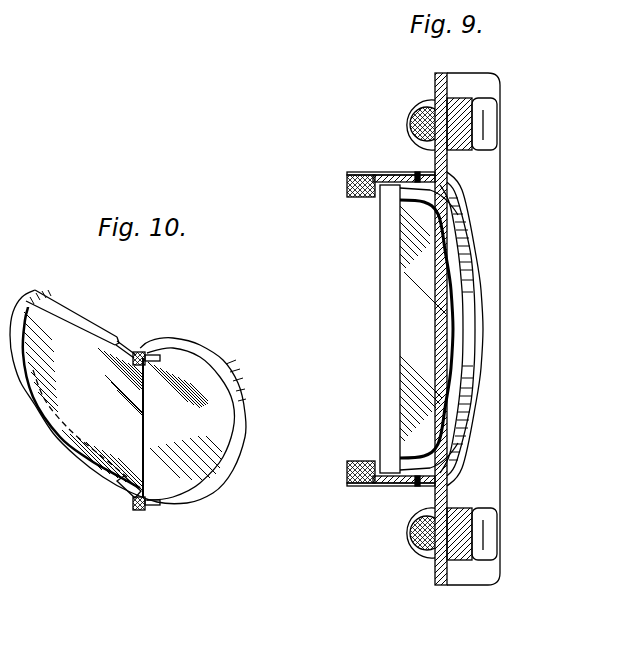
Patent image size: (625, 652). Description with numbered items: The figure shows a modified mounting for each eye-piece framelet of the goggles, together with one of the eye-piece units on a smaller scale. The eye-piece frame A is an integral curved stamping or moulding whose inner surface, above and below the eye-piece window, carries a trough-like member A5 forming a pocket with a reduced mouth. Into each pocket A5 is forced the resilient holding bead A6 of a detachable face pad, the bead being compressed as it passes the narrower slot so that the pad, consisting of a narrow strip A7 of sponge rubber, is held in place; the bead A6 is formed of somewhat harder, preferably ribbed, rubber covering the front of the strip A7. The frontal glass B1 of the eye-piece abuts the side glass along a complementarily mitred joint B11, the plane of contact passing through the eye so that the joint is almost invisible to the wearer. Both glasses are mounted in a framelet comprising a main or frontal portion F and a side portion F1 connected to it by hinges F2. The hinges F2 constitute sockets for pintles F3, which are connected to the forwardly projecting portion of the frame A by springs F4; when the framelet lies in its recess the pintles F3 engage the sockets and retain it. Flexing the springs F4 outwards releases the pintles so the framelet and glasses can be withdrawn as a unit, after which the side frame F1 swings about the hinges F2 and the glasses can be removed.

In FIG. 9, the eye-piece frame A is at (448, 167).
In FIG. 9, the trough-like member A5 is at (413, 107).
In FIG. 9, the resilient holding bead A6 is at (425, 104).
In FIG. 9, the strip of resilient material A7 is at (483, 119).
In FIG. 9, the frontal glass B1 is at (442, 320).
In FIG. 10, the frontal glass B1 is at (50, 323).
In FIG. 9, the mitred joint B11 is at (392, 290).
In FIG. 10, the mitred joint B11 is at (143, 442).
In FIG. 10, the frontal portion of framelet F is at (100, 317).
In FIG. 10, the side portion of framelet F1 is at (172, 344).
In FIG. 9, the hinges F2 is at (352, 196).
In FIG. 10, the hinges F2 is at (140, 354).
In FIG. 9, the pintles F3 is at (365, 172).
In FIG. 9, the springs F4 is at (398, 175).